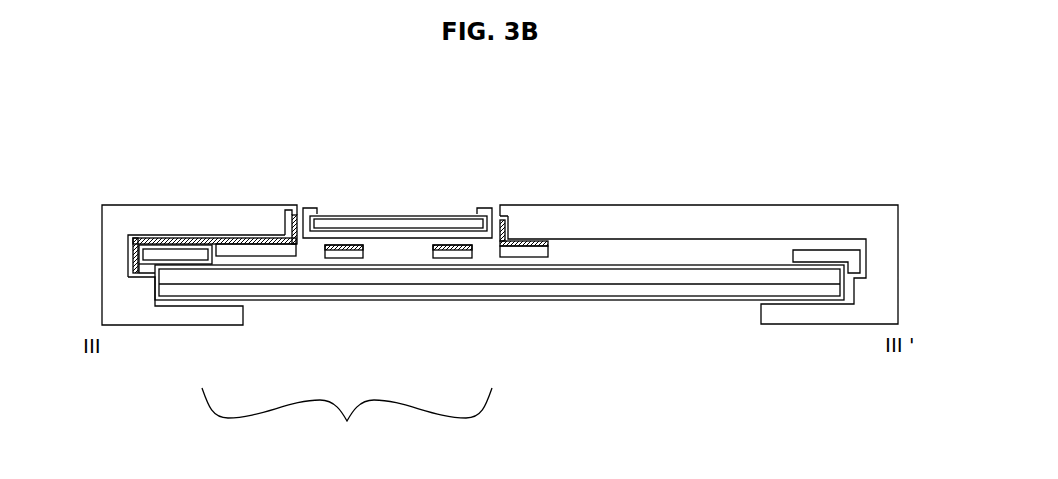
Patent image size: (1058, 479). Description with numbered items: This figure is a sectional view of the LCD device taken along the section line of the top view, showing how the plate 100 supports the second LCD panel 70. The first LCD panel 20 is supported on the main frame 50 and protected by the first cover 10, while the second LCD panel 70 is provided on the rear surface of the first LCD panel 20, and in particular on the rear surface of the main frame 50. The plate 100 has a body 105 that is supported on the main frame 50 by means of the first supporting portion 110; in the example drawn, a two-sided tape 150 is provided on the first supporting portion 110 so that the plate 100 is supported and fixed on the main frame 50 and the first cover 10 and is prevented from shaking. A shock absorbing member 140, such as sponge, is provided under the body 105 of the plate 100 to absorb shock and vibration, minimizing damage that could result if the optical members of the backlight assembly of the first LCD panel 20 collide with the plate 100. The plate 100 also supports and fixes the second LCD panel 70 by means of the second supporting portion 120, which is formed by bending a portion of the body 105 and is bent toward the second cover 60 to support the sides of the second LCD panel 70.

The first cover 10 is at (133, 313).
The first LCD panel 20 is at (572, 292).
The main frame 50 is at (138, 240).
The second cover 60 is at (170, 213).
The second LCD panel 70 is at (400, 217).
The plate 100 is at (347, 419).
The body 105 is at (252, 262).
The first supporting portion 110 is at (138, 267).
The second supporting portion 120 is at (498, 245).
The shock absorbing member 140 is at (338, 243).
The two-sided tape 150 is at (128, 262).